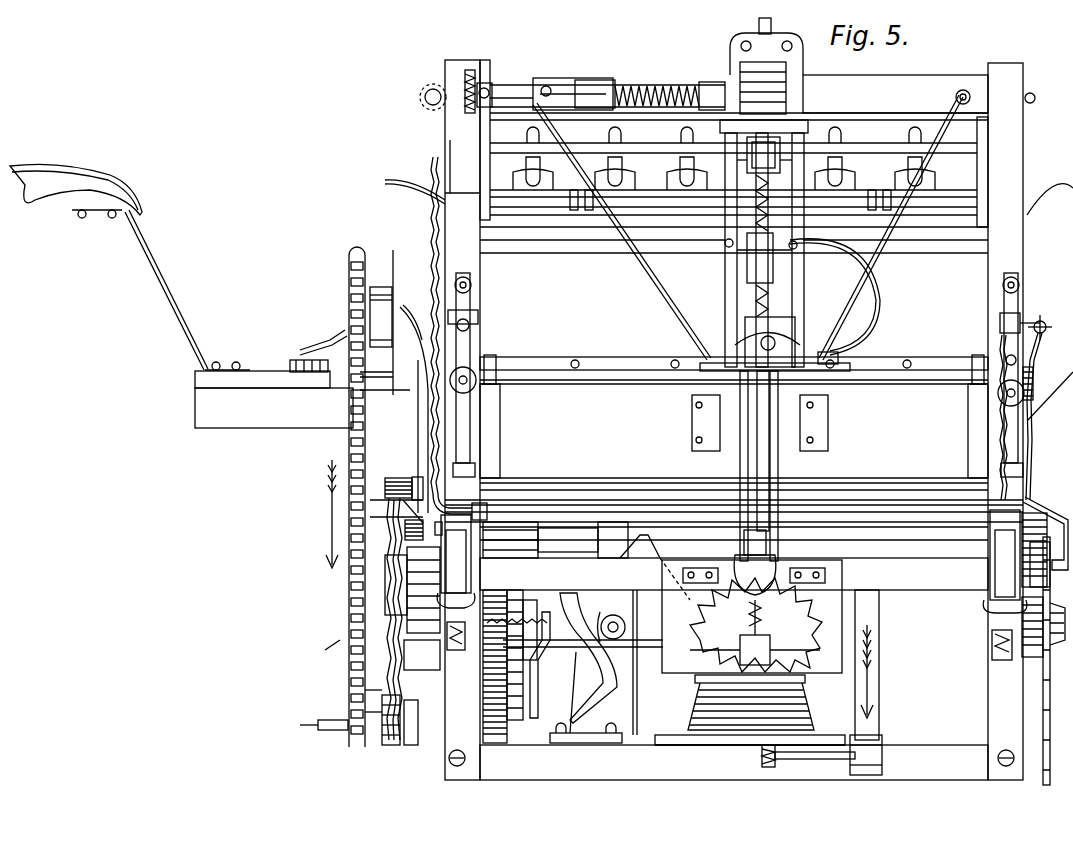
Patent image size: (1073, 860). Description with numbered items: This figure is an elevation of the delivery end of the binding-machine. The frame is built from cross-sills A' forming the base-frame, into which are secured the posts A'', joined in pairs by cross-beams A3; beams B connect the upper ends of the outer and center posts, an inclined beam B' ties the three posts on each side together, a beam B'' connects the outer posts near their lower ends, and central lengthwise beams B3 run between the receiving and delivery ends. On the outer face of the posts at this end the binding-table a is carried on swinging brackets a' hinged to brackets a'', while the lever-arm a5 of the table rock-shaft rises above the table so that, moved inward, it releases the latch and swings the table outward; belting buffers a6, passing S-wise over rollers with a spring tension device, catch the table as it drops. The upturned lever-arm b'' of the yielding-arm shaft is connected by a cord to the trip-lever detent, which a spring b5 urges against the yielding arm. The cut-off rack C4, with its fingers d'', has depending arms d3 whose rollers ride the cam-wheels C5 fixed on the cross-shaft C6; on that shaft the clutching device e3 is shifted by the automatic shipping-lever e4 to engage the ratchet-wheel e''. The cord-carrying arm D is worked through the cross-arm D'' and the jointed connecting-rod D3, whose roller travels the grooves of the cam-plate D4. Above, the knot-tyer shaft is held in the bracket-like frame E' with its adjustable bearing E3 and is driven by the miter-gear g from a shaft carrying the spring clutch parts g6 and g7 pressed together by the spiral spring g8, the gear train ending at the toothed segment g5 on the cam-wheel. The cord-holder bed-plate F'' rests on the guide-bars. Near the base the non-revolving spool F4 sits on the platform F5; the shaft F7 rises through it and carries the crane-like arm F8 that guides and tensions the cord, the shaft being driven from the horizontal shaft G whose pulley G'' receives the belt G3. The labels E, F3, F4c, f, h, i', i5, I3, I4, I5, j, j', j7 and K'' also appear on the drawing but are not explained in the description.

The posts A'' is at (759, 420).
The cross-sills A' is at (734, 762).
The cross-beams A3 is at (895, 94).
The beams B is at (730, 164).
The cross bar F3 is at (734, 240).
The cut-off rack C4 is at (734, 358).
The fingers d'' is at (748, 365).
The central lengthwise beams B3 is at (734, 473).
The binding-table a is at (734, 520).
The beam B'' is at (734, 574).
The inclined beam B' is at (734, 416).
The cam-wheel C5 is at (747, 357).
The non-revolving spool F4 is at (505, 88).
The fixed clutch part g6 is at (556, 82).
The sliding clutch part g7 is at (595, 78).
The spiral spring g8 is at (670, 79).
The miter-gear wheel g is at (628, 104).
The beveled toothed segment g5 is at (425, 97).
The vertical column E is at (764, 191).
The bearing E3 is at (782, 144).
The block i5 is at (761, 268).
The cam block h is at (775, 340).
The bracket-like frame E' is at (727, 424).
The curved pipe i' is at (841, 297).
The bed-plate F'' is at (746, 466).
The brackets a'' is at (744, 422).
The swinging brackets a' is at (723, 335).
The upturned lever-arm b'' is at (1048, 406).
The cams K'' is at (730, 158).
The guides f is at (730, 168).
The scoop I5 is at (76, 191).
The table I3 is at (239, 319).
The table top I4 is at (262, 375).
The chain j is at (332, 497).
The arrow j7 is at (330, 505).
The lever j' is at (324, 685).
The cord-carrying arm D is at (394, 381).
The cross-arm D'' is at (406, 499).
The jointed connecting-rod D3 is at (404, 619).
The cam-plate D4 is at (402, 692).
The buffers a6 is at (732, 585).
The clutching device e3 is at (555, 540).
The spring b5 is at (655, 559).
The ratchet-wheel e'' is at (522, 666).
The automatic shipping-lever e4 is at (583, 666).
The shaft F7 is at (752, 616).
The crane-like arm F8 is at (755, 635).
The cone pulley F4c is at (753, 702).
The platform F5 is at (750, 748).
The horizontal shaft G is at (796, 761).
The belt G3 is at (877, 665).
The pulley G'' is at (877, 755).
The cross-shaft C6 is at (934, 649).
The depending arm d3 is at (1045, 636).
The lever-arm a5 is at (415, 214).